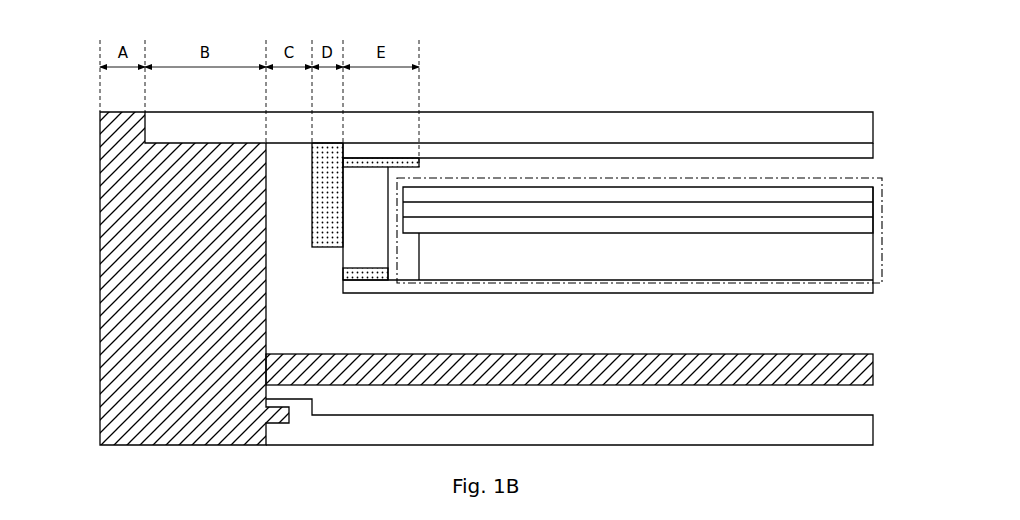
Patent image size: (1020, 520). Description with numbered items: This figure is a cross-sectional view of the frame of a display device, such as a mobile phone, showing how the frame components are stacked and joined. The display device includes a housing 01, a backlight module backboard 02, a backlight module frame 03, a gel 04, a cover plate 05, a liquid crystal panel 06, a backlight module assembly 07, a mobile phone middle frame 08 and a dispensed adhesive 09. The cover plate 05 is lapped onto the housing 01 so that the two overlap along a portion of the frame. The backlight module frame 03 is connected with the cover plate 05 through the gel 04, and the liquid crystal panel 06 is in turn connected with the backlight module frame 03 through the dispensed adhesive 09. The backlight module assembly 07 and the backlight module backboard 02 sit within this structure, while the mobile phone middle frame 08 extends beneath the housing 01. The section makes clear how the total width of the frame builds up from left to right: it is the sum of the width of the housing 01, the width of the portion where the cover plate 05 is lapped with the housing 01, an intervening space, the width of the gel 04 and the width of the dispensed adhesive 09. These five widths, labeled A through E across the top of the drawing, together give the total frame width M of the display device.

The housing 01 is at (130, 343).
The backlight module backboard 02 is at (845, 288).
The backlight module frame 03 is at (353, 263).
The gel 04 is at (317, 230).
The cover plate 05 is at (520, 132).
The liquid crystal panel 06 is at (720, 150).
The backlight module assembly 07 is at (608, 178).
The mobile phone middle frame 08 is at (873, 353).
The dispensed adhesive 09 is at (382, 162).